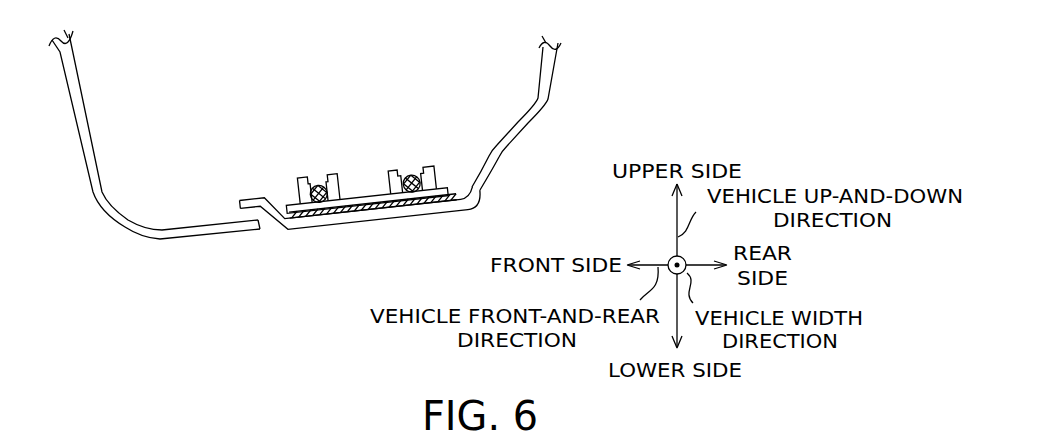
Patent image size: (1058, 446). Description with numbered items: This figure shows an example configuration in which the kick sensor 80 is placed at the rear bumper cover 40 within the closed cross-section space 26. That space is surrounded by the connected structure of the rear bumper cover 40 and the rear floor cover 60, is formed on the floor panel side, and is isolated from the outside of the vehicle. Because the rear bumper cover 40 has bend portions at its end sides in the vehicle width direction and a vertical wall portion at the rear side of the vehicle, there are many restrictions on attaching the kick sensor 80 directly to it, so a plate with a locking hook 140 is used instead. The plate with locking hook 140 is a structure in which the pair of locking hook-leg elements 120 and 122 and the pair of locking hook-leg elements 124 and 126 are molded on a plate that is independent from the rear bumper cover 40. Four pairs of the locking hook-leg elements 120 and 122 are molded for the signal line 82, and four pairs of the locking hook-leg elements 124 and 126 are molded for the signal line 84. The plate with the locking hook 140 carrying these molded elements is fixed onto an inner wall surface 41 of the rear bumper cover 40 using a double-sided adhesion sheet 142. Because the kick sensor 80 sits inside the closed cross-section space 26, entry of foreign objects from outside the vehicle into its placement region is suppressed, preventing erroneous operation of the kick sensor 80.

The closed cross-section space 26 is at (394, 42).
The rear bumper cover 40 is at (528, 133).
The inner wall surface 41 is at (463, 190).
The rear floor cover 60 is at (93, 194).
The kick sensor 80 is at (287, 111).
The signal line 82 is at (321, 186).
The signal line 84 is at (415, 177).
The locking hook-leg element 120 is at (297, 203).
The locking hook-leg element 122 is at (348, 177).
The locking hook-leg element 124 is at (393, 186).
The locking hook-leg element 126 is at (446, 170).
The plate with locking hook 140 is at (358, 206).
The double-sided adhesion sheet 142 is at (392, 208).